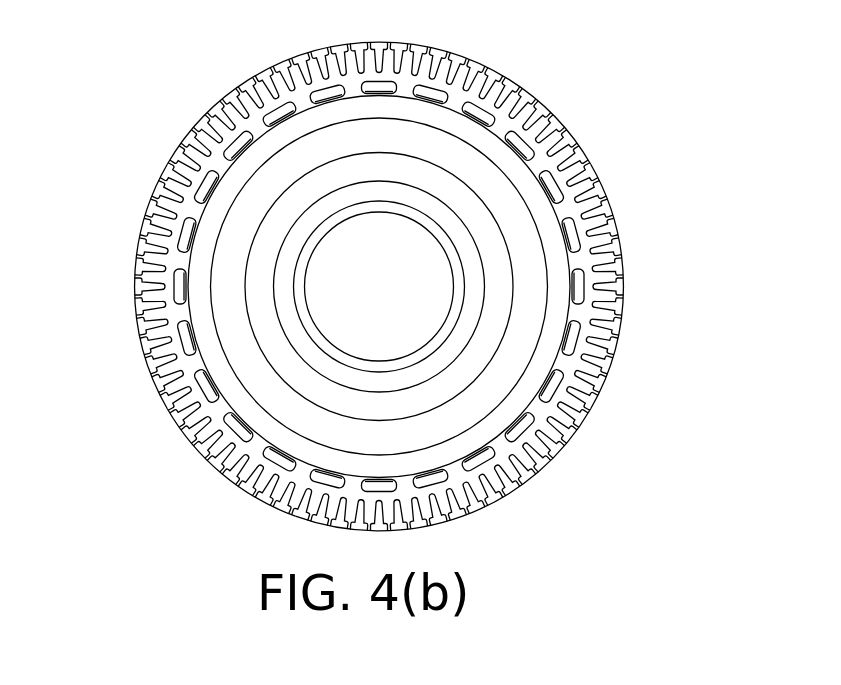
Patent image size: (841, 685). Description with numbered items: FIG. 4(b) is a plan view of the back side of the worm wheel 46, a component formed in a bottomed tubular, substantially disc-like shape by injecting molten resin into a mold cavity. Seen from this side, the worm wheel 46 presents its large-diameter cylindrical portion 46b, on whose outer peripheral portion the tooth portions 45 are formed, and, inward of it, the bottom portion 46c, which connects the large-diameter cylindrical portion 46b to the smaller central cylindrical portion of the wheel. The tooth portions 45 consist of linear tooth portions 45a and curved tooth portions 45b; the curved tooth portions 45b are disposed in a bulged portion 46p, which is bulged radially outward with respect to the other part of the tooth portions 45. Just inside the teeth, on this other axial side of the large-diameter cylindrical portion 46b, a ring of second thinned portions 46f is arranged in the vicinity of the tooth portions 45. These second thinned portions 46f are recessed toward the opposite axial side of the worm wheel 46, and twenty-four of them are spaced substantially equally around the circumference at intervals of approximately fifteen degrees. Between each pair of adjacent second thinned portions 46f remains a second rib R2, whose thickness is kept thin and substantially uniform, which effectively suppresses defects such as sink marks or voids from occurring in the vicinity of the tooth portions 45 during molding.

The tooth portions 45 is at (627, 263).
The linear tooth portions 45a is at (140, 285).
The curved tooth portions 45b is at (192, 430).
The worm wheel 46 is at (585, 96).
The large-diameter cylindrical portion 46b is at (248, 106).
The bottom portion 46c is at (512, 352).
The second thinned portions 46f is at (186, 235).
The bulged portion 46p is at (160, 147).
The second rib R2 is at (497, 133).